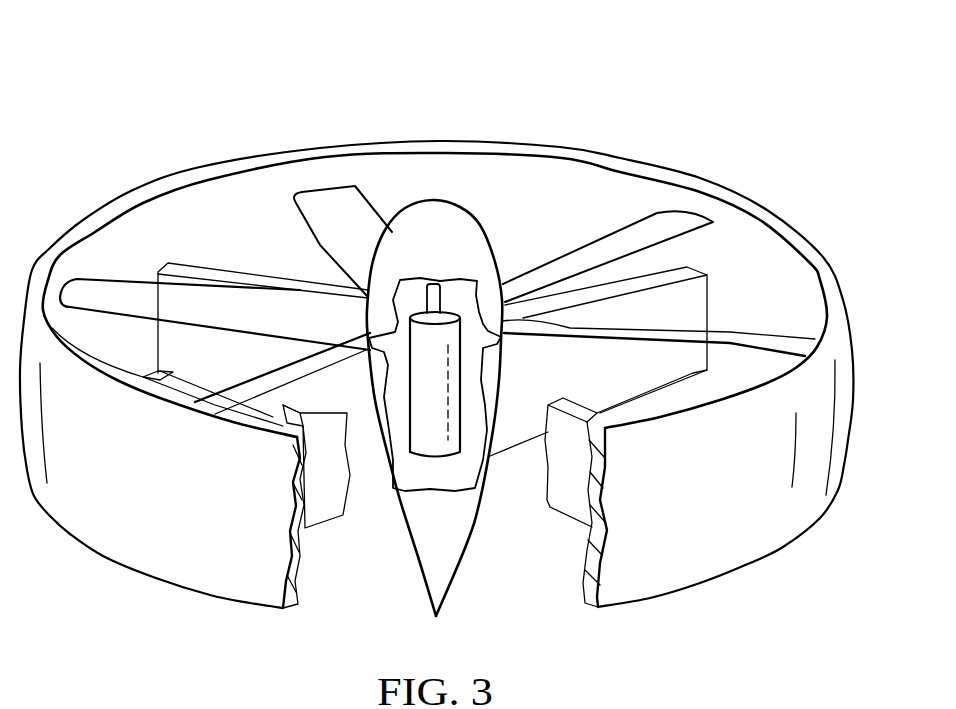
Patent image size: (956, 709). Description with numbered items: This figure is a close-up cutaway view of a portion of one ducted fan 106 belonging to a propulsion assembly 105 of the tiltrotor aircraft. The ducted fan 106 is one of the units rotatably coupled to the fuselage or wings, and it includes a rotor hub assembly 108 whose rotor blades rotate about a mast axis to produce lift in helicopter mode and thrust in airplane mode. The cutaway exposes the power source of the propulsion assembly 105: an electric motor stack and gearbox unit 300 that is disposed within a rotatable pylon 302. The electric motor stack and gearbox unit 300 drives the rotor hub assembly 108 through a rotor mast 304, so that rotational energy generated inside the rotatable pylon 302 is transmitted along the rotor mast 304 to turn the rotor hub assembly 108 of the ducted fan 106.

The propulsion assembly 105 is at (597, 86).
The ducted fan 106 is at (205, 169).
The rotor hub assembly 108 is at (431, 196).
The electric motor stack and gearbox unit 300 is at (429, 461).
The rotatable pylon 302 is at (461, 363).
The rotor mast 304 is at (444, 298).